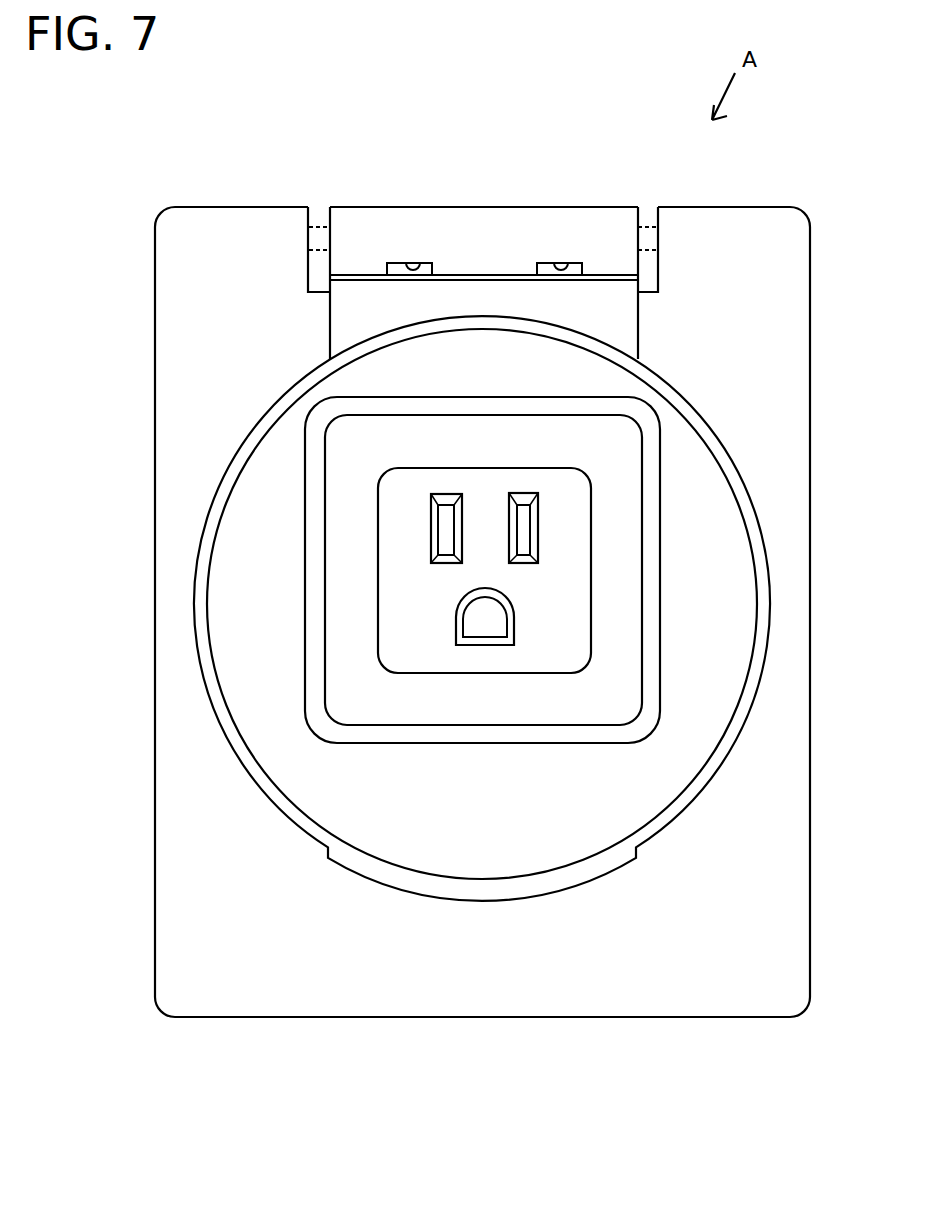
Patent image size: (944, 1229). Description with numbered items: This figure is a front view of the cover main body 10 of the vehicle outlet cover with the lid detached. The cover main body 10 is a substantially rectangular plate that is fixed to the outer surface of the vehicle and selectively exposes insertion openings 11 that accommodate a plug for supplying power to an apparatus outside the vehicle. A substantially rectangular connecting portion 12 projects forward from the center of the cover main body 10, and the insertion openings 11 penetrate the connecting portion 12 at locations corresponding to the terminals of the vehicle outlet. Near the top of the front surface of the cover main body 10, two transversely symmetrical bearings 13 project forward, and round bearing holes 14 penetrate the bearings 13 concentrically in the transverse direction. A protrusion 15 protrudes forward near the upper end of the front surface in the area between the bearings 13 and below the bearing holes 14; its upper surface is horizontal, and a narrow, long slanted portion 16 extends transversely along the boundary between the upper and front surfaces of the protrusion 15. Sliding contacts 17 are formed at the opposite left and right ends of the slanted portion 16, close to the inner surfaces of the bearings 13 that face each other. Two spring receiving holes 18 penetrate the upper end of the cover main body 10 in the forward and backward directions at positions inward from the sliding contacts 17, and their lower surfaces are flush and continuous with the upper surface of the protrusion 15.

The cover main body 10 is at (762, 227).
The insertion openings 11 is at (441, 530).
The connecting portion 12 is at (401, 697).
The bearings 13 is at (318, 220).
The bearing holes 14 is at (320, 232).
The protrusion 15 is at (347, 330).
The slanted portion 16 is at (492, 277).
The sliding contacts 17 is at (350, 277).
The spring receiving holes 18 is at (413, 262).